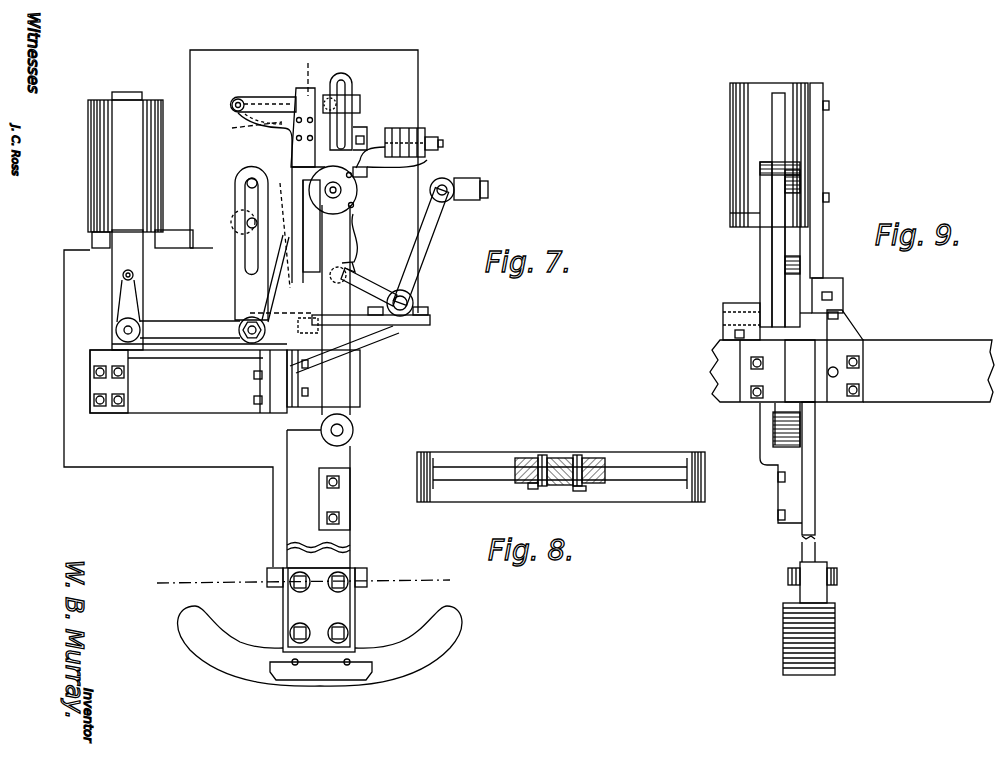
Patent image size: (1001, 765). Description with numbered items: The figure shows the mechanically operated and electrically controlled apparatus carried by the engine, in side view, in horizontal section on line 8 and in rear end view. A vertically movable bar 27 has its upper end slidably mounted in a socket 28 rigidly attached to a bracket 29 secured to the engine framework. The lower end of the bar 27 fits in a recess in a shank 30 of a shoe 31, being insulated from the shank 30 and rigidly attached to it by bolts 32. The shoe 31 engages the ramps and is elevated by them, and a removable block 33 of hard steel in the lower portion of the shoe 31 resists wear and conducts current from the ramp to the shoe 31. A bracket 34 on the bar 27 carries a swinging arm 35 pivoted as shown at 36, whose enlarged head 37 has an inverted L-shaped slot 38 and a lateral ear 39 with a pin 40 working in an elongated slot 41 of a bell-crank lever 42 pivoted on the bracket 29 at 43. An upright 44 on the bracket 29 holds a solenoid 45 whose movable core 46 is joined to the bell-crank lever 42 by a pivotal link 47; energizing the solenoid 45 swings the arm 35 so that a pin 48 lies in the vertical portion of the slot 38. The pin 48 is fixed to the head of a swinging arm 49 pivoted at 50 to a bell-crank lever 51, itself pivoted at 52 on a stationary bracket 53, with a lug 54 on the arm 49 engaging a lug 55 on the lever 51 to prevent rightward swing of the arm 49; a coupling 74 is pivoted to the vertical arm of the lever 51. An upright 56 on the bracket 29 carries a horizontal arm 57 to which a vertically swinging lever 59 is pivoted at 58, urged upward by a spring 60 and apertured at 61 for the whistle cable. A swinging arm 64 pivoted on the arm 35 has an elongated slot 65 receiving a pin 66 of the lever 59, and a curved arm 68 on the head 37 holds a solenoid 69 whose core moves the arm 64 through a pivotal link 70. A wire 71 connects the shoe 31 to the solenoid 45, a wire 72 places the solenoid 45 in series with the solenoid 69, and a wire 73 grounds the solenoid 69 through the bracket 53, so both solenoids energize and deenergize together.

In FIG. 7, the section line 8- 8 is at (294, 581).
In FIG. 7, the bar 27 is at (298, 490).
In FIG. 8, the bar 27 is at (563, 486).
In FIG. 9, the bar 27 is at (815, 481).
In FIG. 7, the socket 28 is at (353, 383).
In FIG. 9, the socket 28 is at (800, 371).
In FIG. 7, the bracket 29 is at (188, 378).
In FIG. 9, the bracket 29 is at (852, 356).
In FIG. 7, the shank 30 is at (350, 580).
In FIG. 8, the shank 30 is at (524, 458).
In FIG. 9, the shank 30 is at (815, 590).
In FIG. 7, the shoe 31 is at (235, 658).
In FIG. 8, the shoe 31 is at (476, 460).
In FIG. 9, the shoe 31 is at (800, 642).
In FIG. 7, the bolts 32 is at (337, 588).
In FIG. 8, the bolts 32 is at (577, 455).
In FIG. 9, the bolts 32 is at (838, 577).
In FIG. 7, the removable block 33 is at (328, 681).
In FIG. 7, the bracket 34 is at (341, 494).
In FIG. 9, the bracket 34 is at (778, 455).
In FIG. 7, the swinging arm 35 is at (338, 368).
In FIG. 9, the swinging arm 35 is at (775, 395).
In FIG. 7, the pivot 36 is at (343, 432).
In FIG. 9, the pivot 36 is at (760, 430).
In FIG. 7, the enlarged head 37 is at (325, 217).
In FIG. 9, the enlarged head 37 is at (778, 223).
In FIG. 7, the inverted L-shaped slot 38 is at (312, 227).
In FIG. 7, the lateral extension or ear 39 is at (280, 227).
In FIG. 7, the pin 40 is at (240, 222).
In FIG. 7, the elongated slot 41 is at (252, 178).
In FIG. 7, the bell-crank lever 42 is at (240, 287).
In FIG. 9, the bell-crank lever 42 is at (767, 247).
In FIG. 7, the pivot 43 is at (252, 343).
In FIG. 9, the pivot 43 is at (723, 320).
In FIG. 7, the upright 44 is at (112, 272).
In FIG. 9, the upright 44 is at (822, 175).
In FIG. 7, the solenoid 45 is at (105, 162).
In FIG. 9, the solenoid 45 is at (762, 133).
In FIG. 7, the movable core 46 is at (127, 247).
In FIG. 7, the pivotal link 47 is at (128, 302).
In FIG. 7, the pin 48 is at (342, 190).
In FIG. 7, the swinging arm 49 is at (356, 242).
In FIG. 7, the pivot 50 is at (301, 311).
In FIG. 7, the bell-crank lever 51 is at (408, 282).
In FIG. 7, the pivot 52 is at (405, 318).
In FIG. 7, the stationary bracket 53 is at (400, 332).
In FIG. 7, the lug 54 is at (360, 259).
In FIG. 7, the lug 55 is at (348, 268).
In FIG. 7, the upright 56 is at (296, 150).
In FIG. 7, the horizontal arm 57 is at (282, 120).
In FIG. 7, the pivot 58 is at (232, 105).
In FIG. 7, the vertically swinging lever 59 is at (290, 97).
In FIG. 7, the spring 60 is at (264, 92).
In FIG. 7, the aperture 61 is at (355, 110).
In FIG. 7, the swinging arm 64 is at (362, 130).
In FIG. 7, the elongated slot 65 is at (366, 140).
In FIG. 7, the pin 66 is at (352, 100).
In FIG. 7, the curved arm 68 is at (400, 143).
In FIG. 7, the solenoid 69 is at (418, 157).
In FIG. 7, the pivotal link 70 is at (347, 186).
In FIG. 7, the wire 71 is at (64, 415).
In FIG. 7, the wire 72 is at (217, 50).
In FIG. 7, the wire 73 is at (420, 235).
In FIG. 7, the coupling 74 is at (480, 190).